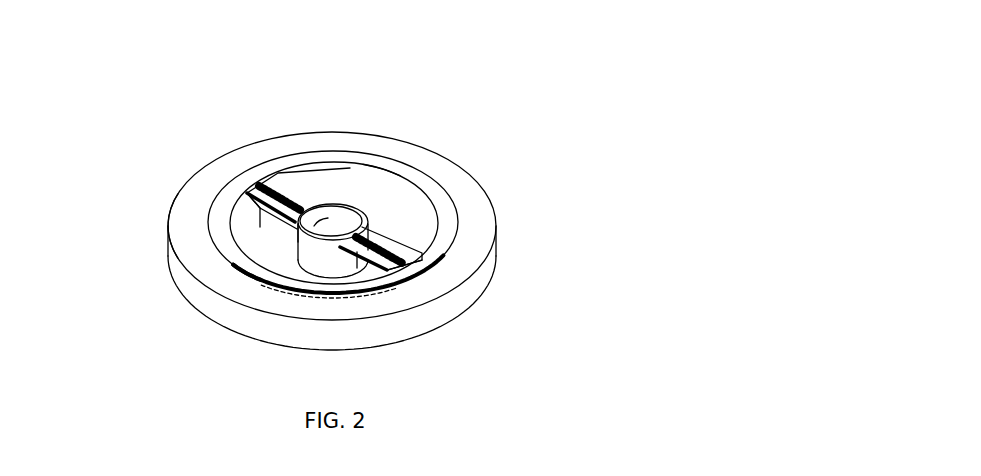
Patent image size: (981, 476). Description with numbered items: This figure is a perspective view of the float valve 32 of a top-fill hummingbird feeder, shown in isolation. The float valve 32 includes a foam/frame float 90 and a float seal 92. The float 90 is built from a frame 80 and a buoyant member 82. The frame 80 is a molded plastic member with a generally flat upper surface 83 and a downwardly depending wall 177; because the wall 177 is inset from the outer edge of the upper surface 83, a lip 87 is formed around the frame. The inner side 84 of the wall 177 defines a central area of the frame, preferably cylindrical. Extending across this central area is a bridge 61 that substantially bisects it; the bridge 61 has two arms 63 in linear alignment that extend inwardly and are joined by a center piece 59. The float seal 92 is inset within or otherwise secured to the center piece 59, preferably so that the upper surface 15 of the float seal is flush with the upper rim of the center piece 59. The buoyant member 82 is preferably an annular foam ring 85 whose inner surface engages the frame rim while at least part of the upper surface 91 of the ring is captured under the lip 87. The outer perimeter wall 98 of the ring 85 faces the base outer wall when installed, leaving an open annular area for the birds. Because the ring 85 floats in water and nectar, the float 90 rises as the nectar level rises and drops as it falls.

The float valve 32 is at (561, 73).
The foam/frame float 90 is at (498, 255).
The buoyant member 82 is at (472, 318).
The annular foam ring 85 is at (168, 230).
The upper surface of the ring 91 is at (196, 192).
The outer perimeter wall 98 is at (187, 281).
The frame 80 is at (458, 212).
The wall 177 is at (383, 188).
The center piece 59 is at (315, 256).
The arms 63 is at (307, 200).
The float seal 92 is at (344, 208).
The upper surface 83 is at (253, 177).
The inner side 84 is at (243, 208).
The bridge 61 is at (399, 252).
The lip 87 is at (240, 278).
The upper surface of the float seal 15 is at (290, 221).